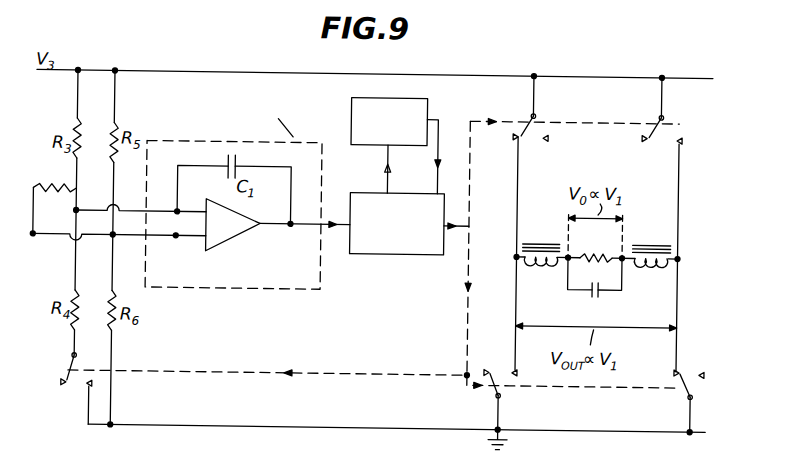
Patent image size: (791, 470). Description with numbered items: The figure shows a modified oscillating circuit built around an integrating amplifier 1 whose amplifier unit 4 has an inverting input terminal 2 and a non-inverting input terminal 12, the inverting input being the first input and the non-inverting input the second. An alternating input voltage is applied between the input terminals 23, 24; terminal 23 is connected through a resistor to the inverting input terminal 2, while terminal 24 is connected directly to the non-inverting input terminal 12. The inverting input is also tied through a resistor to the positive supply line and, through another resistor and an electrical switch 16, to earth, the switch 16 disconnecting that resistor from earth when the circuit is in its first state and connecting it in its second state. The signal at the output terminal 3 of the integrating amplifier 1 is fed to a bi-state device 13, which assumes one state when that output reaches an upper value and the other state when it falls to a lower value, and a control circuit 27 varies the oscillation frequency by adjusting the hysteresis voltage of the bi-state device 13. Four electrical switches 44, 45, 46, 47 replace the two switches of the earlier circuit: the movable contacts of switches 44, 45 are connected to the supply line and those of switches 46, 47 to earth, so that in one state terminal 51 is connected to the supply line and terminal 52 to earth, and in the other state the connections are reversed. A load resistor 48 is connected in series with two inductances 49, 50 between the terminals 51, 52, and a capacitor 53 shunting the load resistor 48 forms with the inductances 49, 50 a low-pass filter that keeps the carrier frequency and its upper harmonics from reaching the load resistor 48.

The integrating amplifier 1 is at (323, 139).
The input terminal 2 is at (180, 208).
The output terminal 3 is at (292, 224).
The amplifier unit 4 is at (229, 241).
The input terminal 12 is at (178, 238).
The bi-state device 13 is at (413, 250).
The electrical switch 16 is at (75, 377).
The input terminal 23 is at (35, 186).
The input terminal 24 is at (35, 236).
The control circuit 27 is at (428, 105).
The electrical switch 44 is at (530, 126).
The electrical switch 45 is at (664, 127).
The electrical switch 46 is at (504, 374).
The electrical switch 47 is at (684, 382).
The load resistor 48 is at (609, 241).
The inductance 49 is at (541, 260).
The inductance 50 is at (648, 240).
The terminal 51 is at (518, 249).
The terminal 52 is at (681, 250).
The capacitor 53 is at (604, 285).